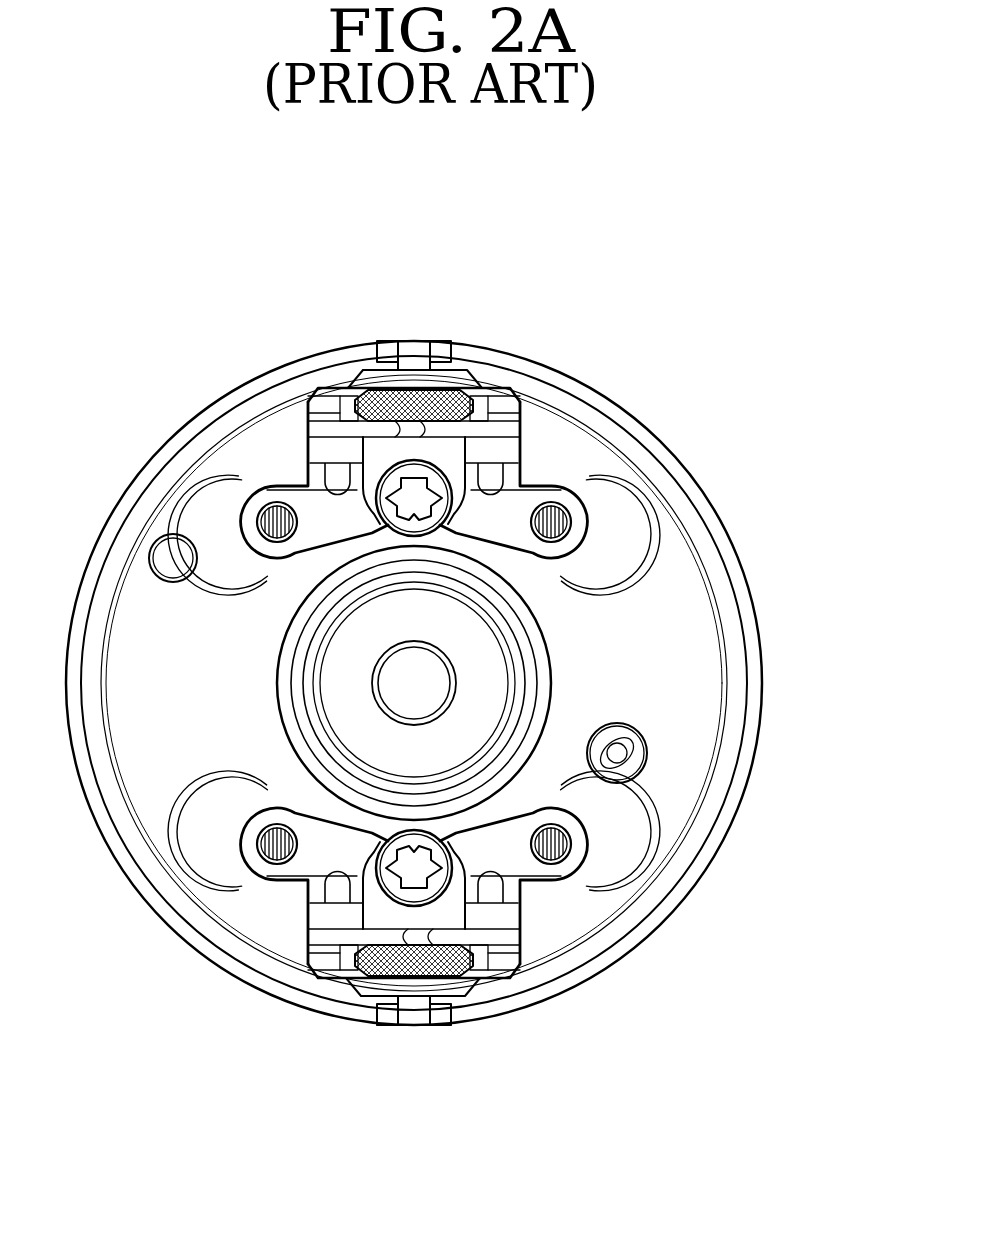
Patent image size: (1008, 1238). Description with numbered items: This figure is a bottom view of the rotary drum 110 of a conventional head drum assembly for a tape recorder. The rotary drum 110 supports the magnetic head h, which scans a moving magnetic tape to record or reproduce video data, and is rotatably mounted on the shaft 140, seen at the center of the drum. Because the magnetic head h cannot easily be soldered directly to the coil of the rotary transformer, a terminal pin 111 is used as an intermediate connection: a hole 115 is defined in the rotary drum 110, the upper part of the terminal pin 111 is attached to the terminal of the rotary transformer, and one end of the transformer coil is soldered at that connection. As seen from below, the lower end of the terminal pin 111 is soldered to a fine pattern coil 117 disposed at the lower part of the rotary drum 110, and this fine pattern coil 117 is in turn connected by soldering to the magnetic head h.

The rotary drum 110 is at (677, 860).
The terminal pin 111 is at (268, 846).
The hole 115 is at (228, 822).
The fine pattern coil (FPC) 117 is at (613, 840).
The shaft 140 is at (490, 668).
The magnetic head h is at (445, 1000).